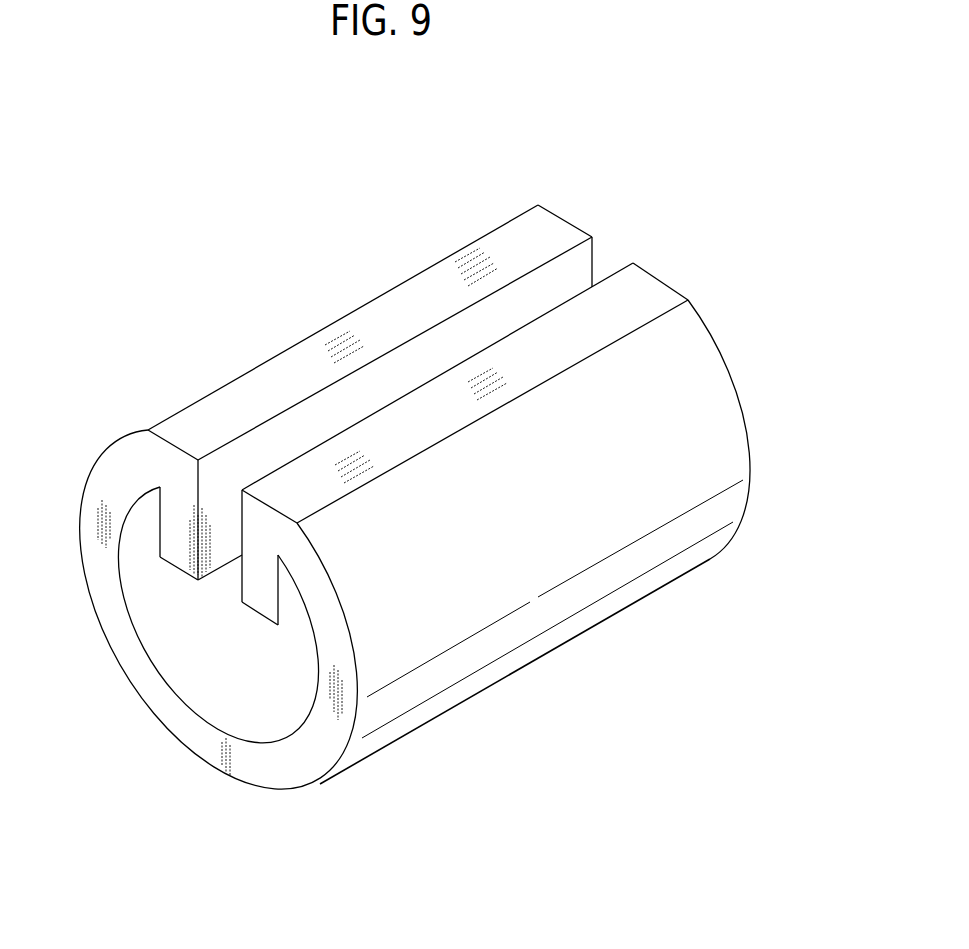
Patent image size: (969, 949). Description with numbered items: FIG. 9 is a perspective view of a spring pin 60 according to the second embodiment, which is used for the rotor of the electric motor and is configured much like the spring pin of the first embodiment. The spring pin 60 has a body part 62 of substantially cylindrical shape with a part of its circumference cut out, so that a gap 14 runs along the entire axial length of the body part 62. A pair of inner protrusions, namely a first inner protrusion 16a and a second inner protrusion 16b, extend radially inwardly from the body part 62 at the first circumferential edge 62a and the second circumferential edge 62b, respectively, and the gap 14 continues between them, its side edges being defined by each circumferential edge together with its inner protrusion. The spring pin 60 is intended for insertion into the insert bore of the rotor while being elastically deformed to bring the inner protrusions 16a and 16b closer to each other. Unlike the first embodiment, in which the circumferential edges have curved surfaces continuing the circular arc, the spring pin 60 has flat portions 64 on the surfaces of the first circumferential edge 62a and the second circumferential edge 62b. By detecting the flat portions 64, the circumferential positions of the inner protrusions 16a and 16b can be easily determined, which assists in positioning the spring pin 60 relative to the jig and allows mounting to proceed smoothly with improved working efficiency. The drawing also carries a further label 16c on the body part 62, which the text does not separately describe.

The spring pin 60 is at (347, 253).
The body part 62 is at (647, 557).
The first circumferential edge 62a is at (183, 478).
The second circumferential edge 62b is at (268, 538).
The flat portion 64 is at (500, 257).
The gap 14 is at (229, 462).
The first inner protrusion 16a is at (178, 553).
The second inner protrusion 16b is at (263, 593).
The outer surface 16c is at (188, 728).